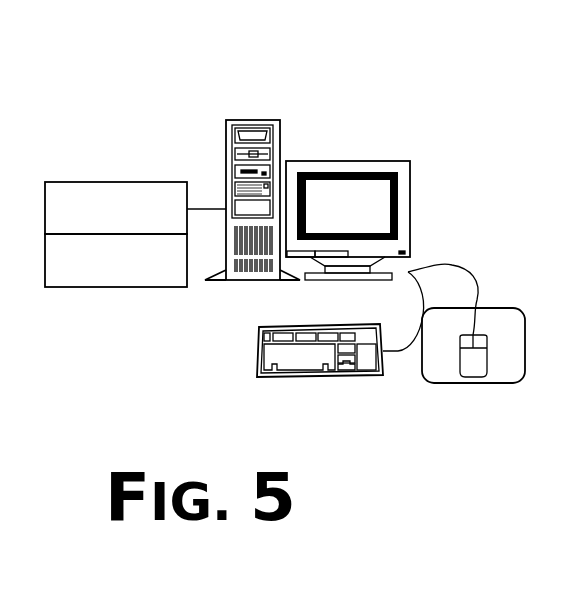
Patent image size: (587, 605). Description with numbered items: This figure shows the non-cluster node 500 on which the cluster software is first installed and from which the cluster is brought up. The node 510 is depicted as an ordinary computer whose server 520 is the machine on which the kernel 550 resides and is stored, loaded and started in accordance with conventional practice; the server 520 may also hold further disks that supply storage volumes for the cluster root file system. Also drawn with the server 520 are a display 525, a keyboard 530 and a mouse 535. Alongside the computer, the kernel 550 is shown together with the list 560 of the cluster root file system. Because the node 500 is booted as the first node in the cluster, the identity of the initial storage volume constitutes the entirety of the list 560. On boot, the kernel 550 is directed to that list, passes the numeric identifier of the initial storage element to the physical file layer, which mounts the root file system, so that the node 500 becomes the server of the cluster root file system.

The non-cluster node 500 is at (140, 30).
The node 510 is at (175, 87).
The server 520 is at (280, 120).
The display monitor 525 is at (410, 161).
The keyboard 530 is at (257, 370).
The mouse 535 is at (467, 378).
The kernel 550 is at (65, 182).
The list 560 is at (93, 288).